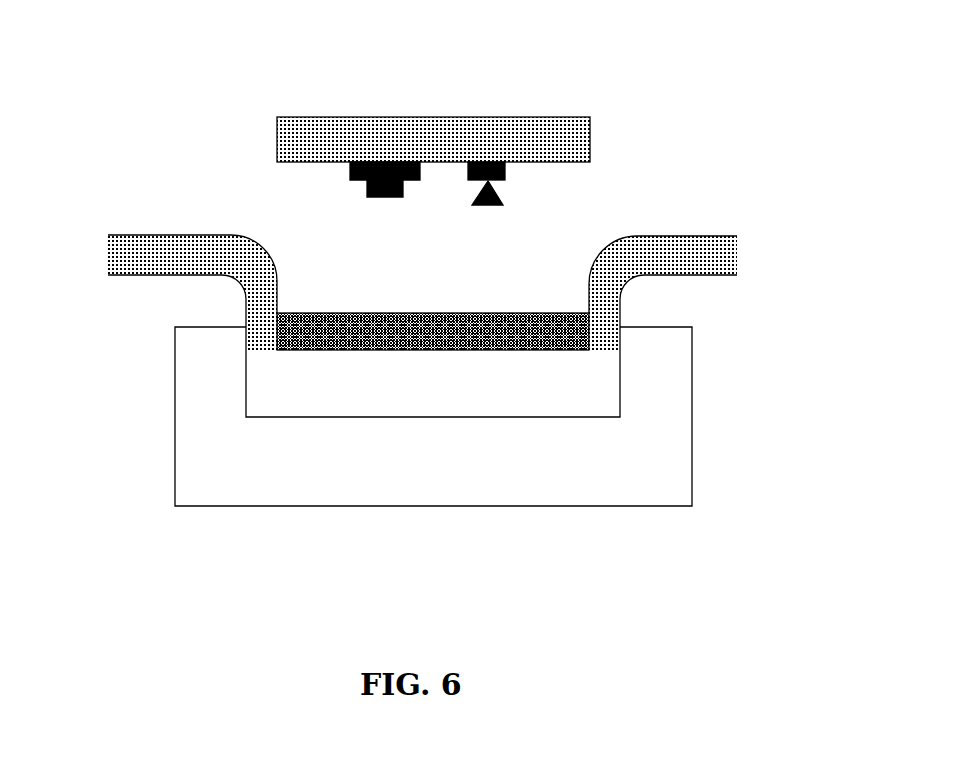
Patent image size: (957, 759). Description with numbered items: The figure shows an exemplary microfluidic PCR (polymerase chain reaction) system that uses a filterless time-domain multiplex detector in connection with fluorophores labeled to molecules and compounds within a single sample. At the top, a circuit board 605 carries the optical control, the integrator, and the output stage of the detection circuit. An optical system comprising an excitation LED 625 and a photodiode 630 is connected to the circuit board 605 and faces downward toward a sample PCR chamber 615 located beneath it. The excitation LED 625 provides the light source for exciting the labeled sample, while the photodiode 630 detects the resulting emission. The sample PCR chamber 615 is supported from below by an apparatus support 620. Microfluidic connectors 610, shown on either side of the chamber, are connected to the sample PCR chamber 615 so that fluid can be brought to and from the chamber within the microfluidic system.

The circuit board 605 is at (325, 116).
The microfluidic connectors 610 is at (223, 233).
The sample PCR chamber 615 is at (373, 350).
The apparatus support 620 is at (504, 507).
The excitation LED 625 is at (382, 198).
The photodiode 630 is at (503, 200).